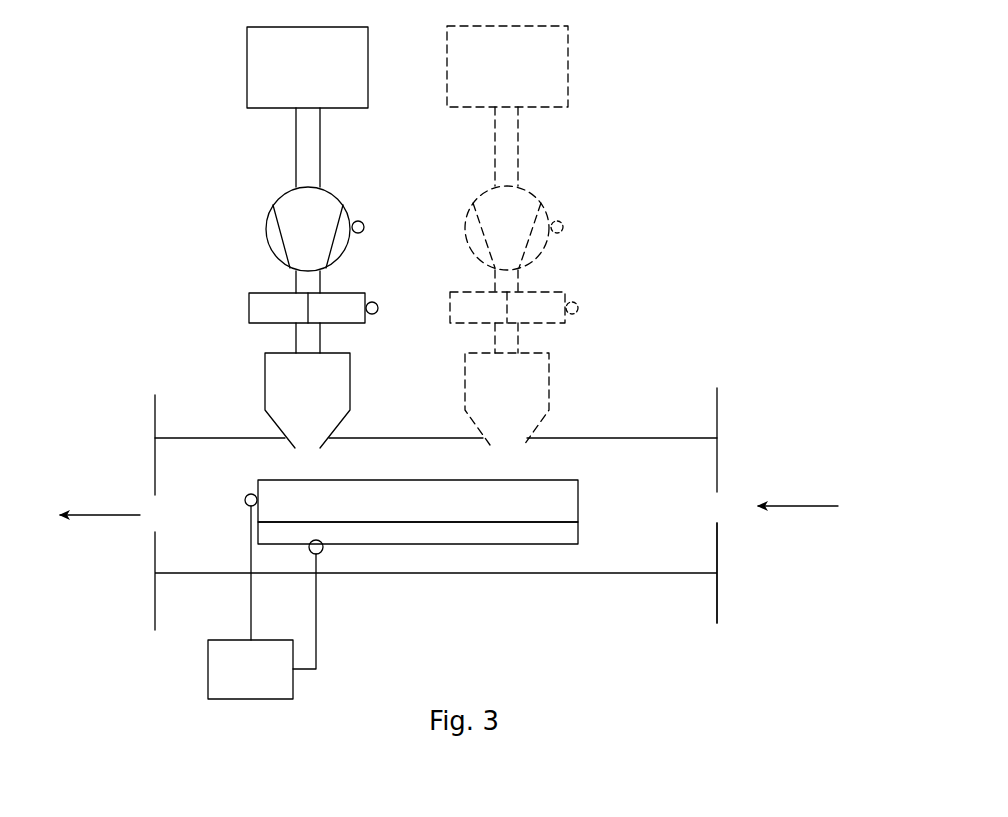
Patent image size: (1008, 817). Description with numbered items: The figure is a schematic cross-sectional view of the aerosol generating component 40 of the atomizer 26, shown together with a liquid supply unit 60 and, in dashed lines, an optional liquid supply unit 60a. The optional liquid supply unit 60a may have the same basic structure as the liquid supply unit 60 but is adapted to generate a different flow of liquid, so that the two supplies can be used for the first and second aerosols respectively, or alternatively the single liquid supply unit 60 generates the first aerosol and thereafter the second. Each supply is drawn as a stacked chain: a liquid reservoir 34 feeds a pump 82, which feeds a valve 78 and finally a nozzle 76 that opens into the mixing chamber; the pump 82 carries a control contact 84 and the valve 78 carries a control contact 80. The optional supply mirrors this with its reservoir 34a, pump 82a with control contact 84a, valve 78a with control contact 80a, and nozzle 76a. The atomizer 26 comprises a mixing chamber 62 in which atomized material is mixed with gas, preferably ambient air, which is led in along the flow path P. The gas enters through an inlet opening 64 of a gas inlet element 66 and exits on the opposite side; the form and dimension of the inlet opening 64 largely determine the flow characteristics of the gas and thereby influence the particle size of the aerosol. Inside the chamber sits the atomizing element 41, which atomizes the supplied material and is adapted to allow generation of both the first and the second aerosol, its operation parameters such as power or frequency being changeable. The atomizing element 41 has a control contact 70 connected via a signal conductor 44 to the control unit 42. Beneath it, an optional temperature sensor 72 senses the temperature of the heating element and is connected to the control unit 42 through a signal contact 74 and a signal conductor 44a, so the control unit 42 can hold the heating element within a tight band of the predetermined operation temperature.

The atomizer 26 is at (122, 630).
The liquid reservoir 34 is at (247, 53).
The liquid reservoir 34a is at (568, 48).
The aerosol generating component 40 is at (132, 98).
The atomizing element 41 is at (578, 498).
The control unit 42 is at (208, 678).
The signal conductor 44 is at (251, 603).
The signal conductor 44a is at (317, 637).
The liquid supply unit 60 is at (103, 255).
The liquid supply unit 60a is at (737, 268).
The mixing chamber 62 is at (213, 438).
The inlet opening 64 is at (718, 508).
The gas inlet element 66 is at (717, 607).
The control contact 70 is at (244, 501).
The temperature sensor 72 is at (578, 535).
The signal contact 74 is at (318, 555).
The nozzle 76 is at (265, 375).
The nozzle 76a is at (549, 370).
The valve 78 is at (249, 305).
The valve 78a is at (548, 290).
The control contact 80 is at (378, 301).
The control contact 80a is at (579, 305).
The pump 82 is at (267, 228).
The pump 82a is at (540, 195).
The control contact 84 is at (362, 222).
The control contact 84a is at (563, 226).
The flow path P is at (122, 518).